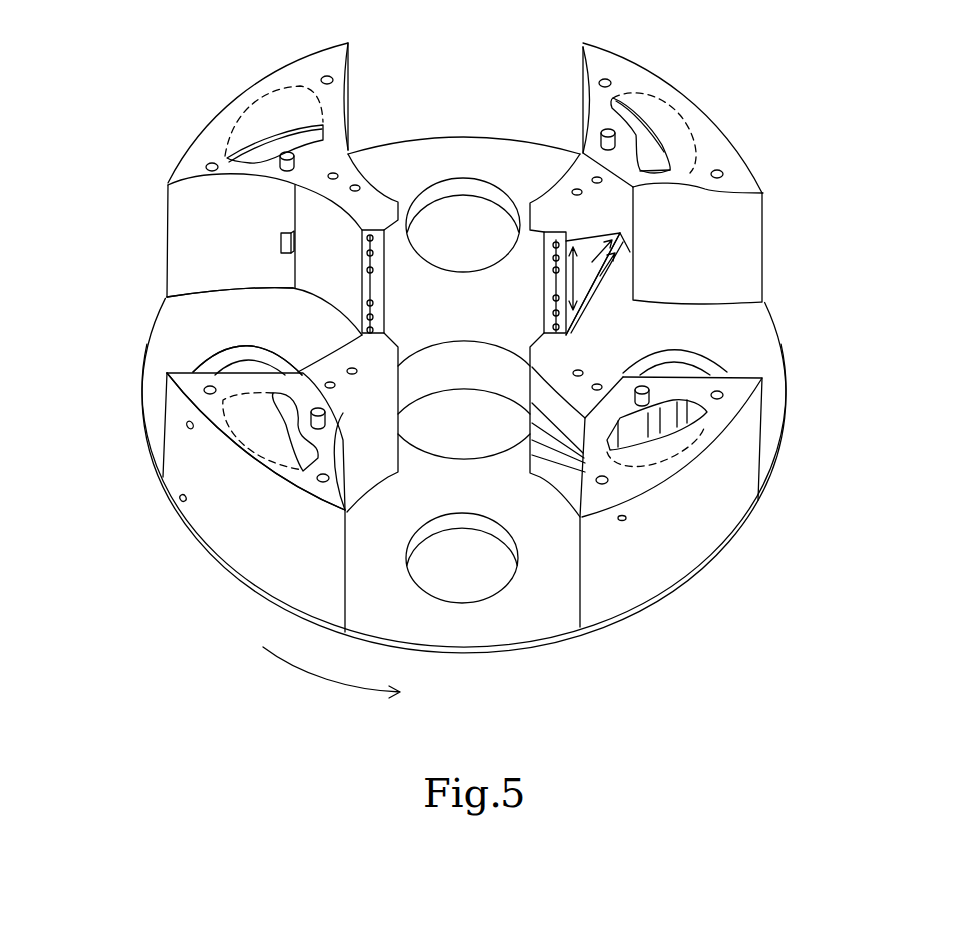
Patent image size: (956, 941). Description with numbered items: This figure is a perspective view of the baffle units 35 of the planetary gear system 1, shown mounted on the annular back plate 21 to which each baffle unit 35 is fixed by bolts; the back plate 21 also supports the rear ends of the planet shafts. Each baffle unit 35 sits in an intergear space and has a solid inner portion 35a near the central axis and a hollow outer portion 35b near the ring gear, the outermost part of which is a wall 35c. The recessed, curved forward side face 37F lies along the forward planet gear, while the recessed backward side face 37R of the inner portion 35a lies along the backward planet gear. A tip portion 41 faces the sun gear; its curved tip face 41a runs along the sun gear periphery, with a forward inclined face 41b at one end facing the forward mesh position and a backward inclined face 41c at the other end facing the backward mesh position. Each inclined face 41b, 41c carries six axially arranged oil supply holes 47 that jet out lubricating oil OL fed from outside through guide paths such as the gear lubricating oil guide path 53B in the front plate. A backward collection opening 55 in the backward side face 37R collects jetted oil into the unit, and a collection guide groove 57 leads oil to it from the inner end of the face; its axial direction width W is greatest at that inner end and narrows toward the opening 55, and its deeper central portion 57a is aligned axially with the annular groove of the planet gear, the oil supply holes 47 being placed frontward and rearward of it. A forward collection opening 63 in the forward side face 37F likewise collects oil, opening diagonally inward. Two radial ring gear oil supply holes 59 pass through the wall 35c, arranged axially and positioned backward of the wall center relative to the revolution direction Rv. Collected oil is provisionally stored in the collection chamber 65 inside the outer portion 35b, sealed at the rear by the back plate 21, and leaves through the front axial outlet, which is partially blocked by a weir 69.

The planetary gear system 1 is at (178, 77).
The back plate 21 is at (513, 648).
The baffle unit 35 is at (240, 100).
The inner portion 35a is at (307, 300).
The outer portion 35b is at (213, 287).
The wall 35c is at (245, 553).
The forward side face 37F is at (213, 253).
The backward side face 37R is at (713, 247).
The tip portion 41 is at (428, 215).
The tip face 41a is at (553, 300).
The forward inclined face 41b is at (362, 290).
The backward inclined face 41c is at (553, 293).
The oil supply holes 47 is at (387, 322).
The gear lubricating oil guide path 53B is at (293, 155).
The backward collection opening 55 is at (647, 173).
The collection guide groove 57 is at (573, 297).
The central portion 57a is at (595, 266).
The ring gear oil supply holes 59 is at (182, 500).
The forward collection opening 63 is at (280, 242).
The collection chamber 65 is at (640, 137).
The weir 69 is at (670, 130).
The lubricating oil OL is at (580, 263).
The axial direction width W is at (577, 307).
The revolution direction Rv is at (333, 683).